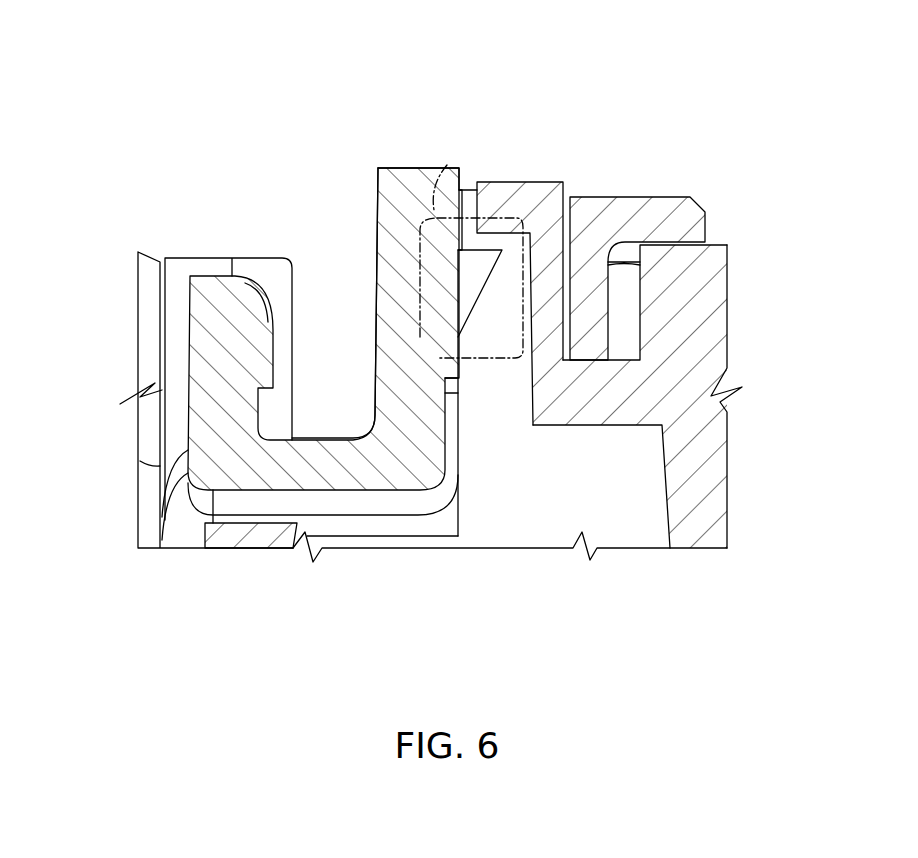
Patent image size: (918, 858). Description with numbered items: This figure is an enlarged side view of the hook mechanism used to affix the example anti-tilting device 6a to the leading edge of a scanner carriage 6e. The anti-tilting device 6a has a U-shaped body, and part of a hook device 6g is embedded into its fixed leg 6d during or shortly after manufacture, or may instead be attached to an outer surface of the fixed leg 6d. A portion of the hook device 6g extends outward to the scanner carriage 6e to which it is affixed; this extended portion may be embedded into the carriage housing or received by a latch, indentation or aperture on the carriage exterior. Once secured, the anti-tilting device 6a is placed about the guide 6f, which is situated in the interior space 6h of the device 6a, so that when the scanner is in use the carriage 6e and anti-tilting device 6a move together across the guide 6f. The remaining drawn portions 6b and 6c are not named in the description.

The anti-tilting device 6a is at (256, 566).
The block portion 6b is at (222, 400).
The bottom wall portion 6c is at (363, 477).
The fixed leg 6d is at (393, 310).
The scanner carriage 6e is at (688, 372).
The guide 6f is at (272, 282).
The hook device 6g is at (447, 166).
The interior space 6h is at (330, 152).